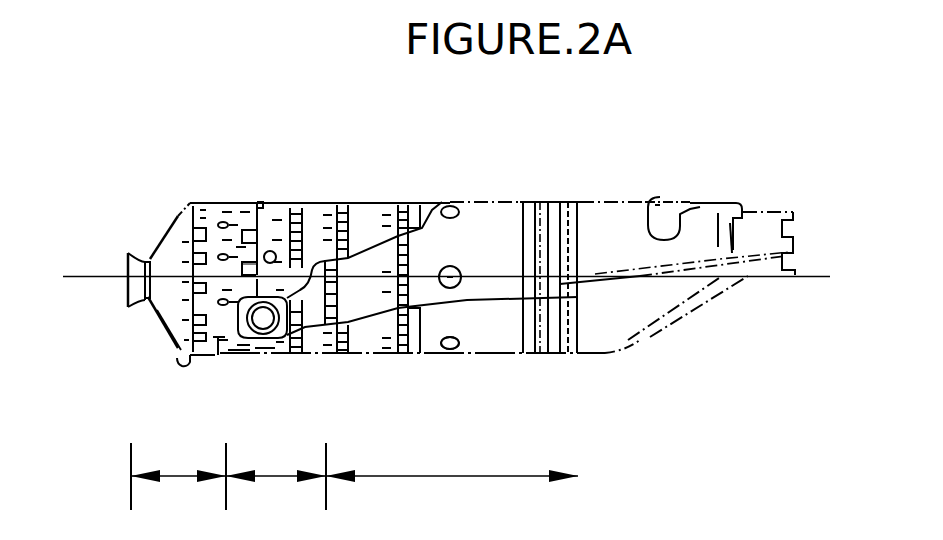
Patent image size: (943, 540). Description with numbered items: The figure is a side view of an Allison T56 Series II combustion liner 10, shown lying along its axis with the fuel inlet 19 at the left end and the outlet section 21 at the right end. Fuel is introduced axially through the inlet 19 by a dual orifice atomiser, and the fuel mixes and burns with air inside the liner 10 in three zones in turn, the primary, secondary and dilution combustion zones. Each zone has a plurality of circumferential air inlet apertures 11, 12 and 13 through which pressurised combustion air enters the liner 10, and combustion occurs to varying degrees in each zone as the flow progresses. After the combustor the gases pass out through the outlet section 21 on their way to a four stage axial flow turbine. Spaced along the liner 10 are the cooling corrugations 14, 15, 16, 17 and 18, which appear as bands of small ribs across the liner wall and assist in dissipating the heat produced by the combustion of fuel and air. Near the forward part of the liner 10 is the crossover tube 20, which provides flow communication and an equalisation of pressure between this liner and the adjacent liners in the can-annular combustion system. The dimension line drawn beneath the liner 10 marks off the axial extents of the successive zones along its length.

The combustion liner 10 is at (533, 196).
The air inlet apertures 11 is at (219, 357).
The air inlet apertures 12 is at (265, 253).
The air inlet apertures 13 is at (457, 355).
The cooling corrugation 14 is at (190, 197).
The cooling corrugation 15 is at (246, 197).
The cooling corrugation 16 is at (295, 197).
The cooling corrugation 17 is at (349, 198).
The cooling corrugation 18 is at (406, 198).
The inlet 19 is at (118, 249).
The crossover tube 20 is at (270, 342).
The outlet section 21 is at (744, 190).